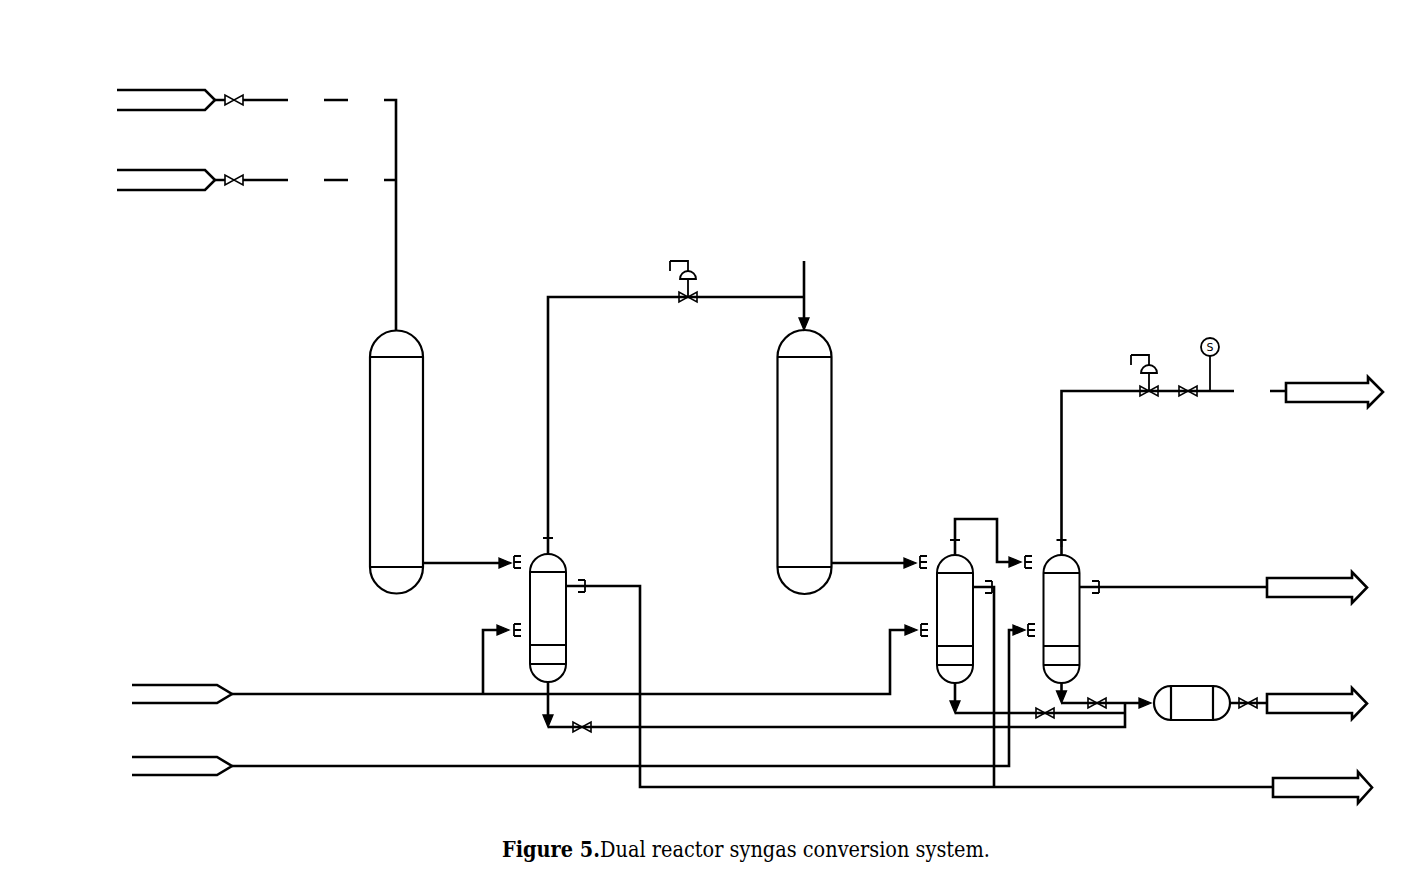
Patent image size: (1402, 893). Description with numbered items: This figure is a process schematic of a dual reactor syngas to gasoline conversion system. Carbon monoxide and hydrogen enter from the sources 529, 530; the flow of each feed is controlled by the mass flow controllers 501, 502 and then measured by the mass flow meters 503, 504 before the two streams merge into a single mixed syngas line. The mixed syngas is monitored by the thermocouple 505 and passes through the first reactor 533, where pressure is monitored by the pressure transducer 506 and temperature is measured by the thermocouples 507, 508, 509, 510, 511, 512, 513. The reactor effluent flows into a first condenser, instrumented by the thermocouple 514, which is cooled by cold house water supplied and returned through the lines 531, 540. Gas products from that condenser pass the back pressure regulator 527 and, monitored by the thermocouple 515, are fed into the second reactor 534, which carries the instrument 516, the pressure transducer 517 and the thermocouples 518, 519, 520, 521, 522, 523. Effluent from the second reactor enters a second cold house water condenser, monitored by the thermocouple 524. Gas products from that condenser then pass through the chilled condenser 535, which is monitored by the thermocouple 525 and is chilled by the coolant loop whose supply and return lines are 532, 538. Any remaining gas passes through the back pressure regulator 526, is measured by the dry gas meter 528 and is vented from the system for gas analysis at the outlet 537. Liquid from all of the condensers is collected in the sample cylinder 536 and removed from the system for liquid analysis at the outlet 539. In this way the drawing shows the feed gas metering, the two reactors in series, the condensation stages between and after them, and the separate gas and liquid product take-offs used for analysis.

The mass flow controller 501 is at (306, 100).
The mass flow controller 502 is at (306, 180).
The mass flow meter 503 is at (366, 100).
The mass flow meter 504 is at (366, 180).
The thermocouple 505 is at (396, 288).
The pressure transducer 506 is at (423, 370).
The thermocouple 507 is at (396, 380).
The thermocouple 508 is at (396, 417).
The thermocouple 509 is at (396, 453).
The thermocouple 510 is at (396, 490).
The thermocouple 511 is at (396, 527).
The thermocouple 512 is at (423, 426).
The thermocouple 513 is at (423, 492).
The thermocouple 514 is at (548, 522).
The thermocouple 515 is at (804, 277).
The temperature indicator 516 is at (832, 370).
The pressure transducer 517 is at (804, 380).
The thermocouple 518 is at (804, 417).
The thermocouple 519 is at (804, 453).
The thermocouple 520 is at (804, 490).
The thermocouple 521 is at (804, 527).
The thermocouple 522 is at (832, 426).
The thermocouple 523 is at (832, 492).
The thermocouple 524 is at (903, 563).
The thermocouple 525 is at (997, 519).
The back pressure regulator 526 is at (1132, 366).
The back pressure regulator 527 is at (671, 271).
The dry gas meter 528 is at (1252, 391).
The carbon monoxide source 529 is at (175, 85).
The hydrogen source 530 is at (175, 165).
The cold house water 531 is at (151, 684).
The coolant loop 532 is at (151, 756).
The first reactor 533 is at (232, 493).
The second reactor 534 is at (662, 439).
The chilled condenser 535 is at (1122, 633).
The sample cylinder 536 is at (1177, 749).
The gas analysis vent 537 is at (1307, 380).
The coolant loop 538 is at (1289, 574).
The liquid analysis outlet 539 is at (1294, 696).
The cold house water 540 is at (1297, 774).